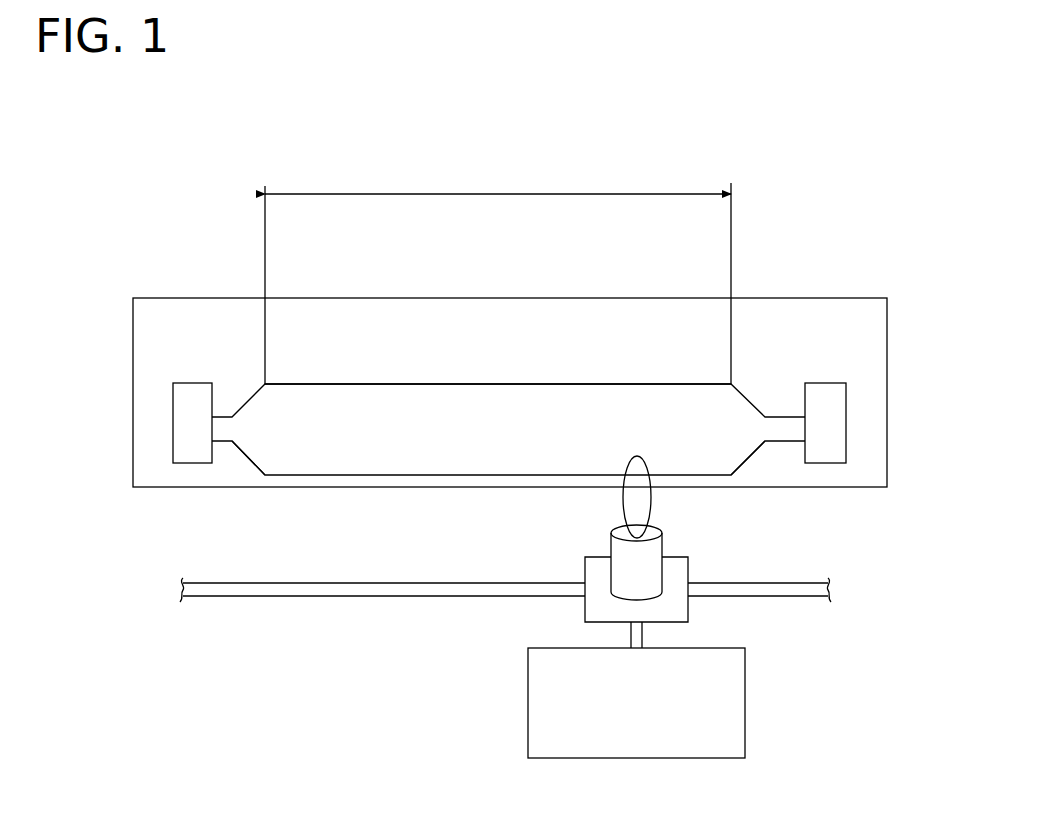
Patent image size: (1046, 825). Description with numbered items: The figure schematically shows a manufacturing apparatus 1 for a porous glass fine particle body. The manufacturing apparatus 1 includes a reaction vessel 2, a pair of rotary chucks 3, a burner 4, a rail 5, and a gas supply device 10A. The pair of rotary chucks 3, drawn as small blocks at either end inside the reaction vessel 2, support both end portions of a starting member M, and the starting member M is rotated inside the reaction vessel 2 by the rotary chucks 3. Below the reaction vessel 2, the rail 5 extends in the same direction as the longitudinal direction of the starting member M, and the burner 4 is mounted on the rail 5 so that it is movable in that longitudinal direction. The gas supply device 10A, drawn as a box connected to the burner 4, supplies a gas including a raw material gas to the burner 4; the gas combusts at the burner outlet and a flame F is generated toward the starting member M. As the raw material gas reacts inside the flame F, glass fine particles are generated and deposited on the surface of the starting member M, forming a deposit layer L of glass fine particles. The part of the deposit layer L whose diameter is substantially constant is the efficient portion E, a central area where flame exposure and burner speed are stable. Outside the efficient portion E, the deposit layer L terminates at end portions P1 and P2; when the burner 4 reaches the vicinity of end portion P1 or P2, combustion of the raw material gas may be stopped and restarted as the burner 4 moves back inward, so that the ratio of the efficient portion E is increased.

The manufacturing apparatus 1 is at (168, 206).
The reaction vessel 2 is at (612, 298).
The rotary chucks 3 is at (190, 395).
The burner 4 is at (655, 580).
The rail 5 is at (305, 583).
The gas supply device 10A is at (522, 708).
The efficient portion E is at (498, 274).
The deposit layer L is at (340, 395).
The starting member M is at (412, 430).
The flame F is at (640, 505).
The end portion P1 is at (765, 441).
The end portion P2 is at (232, 441).